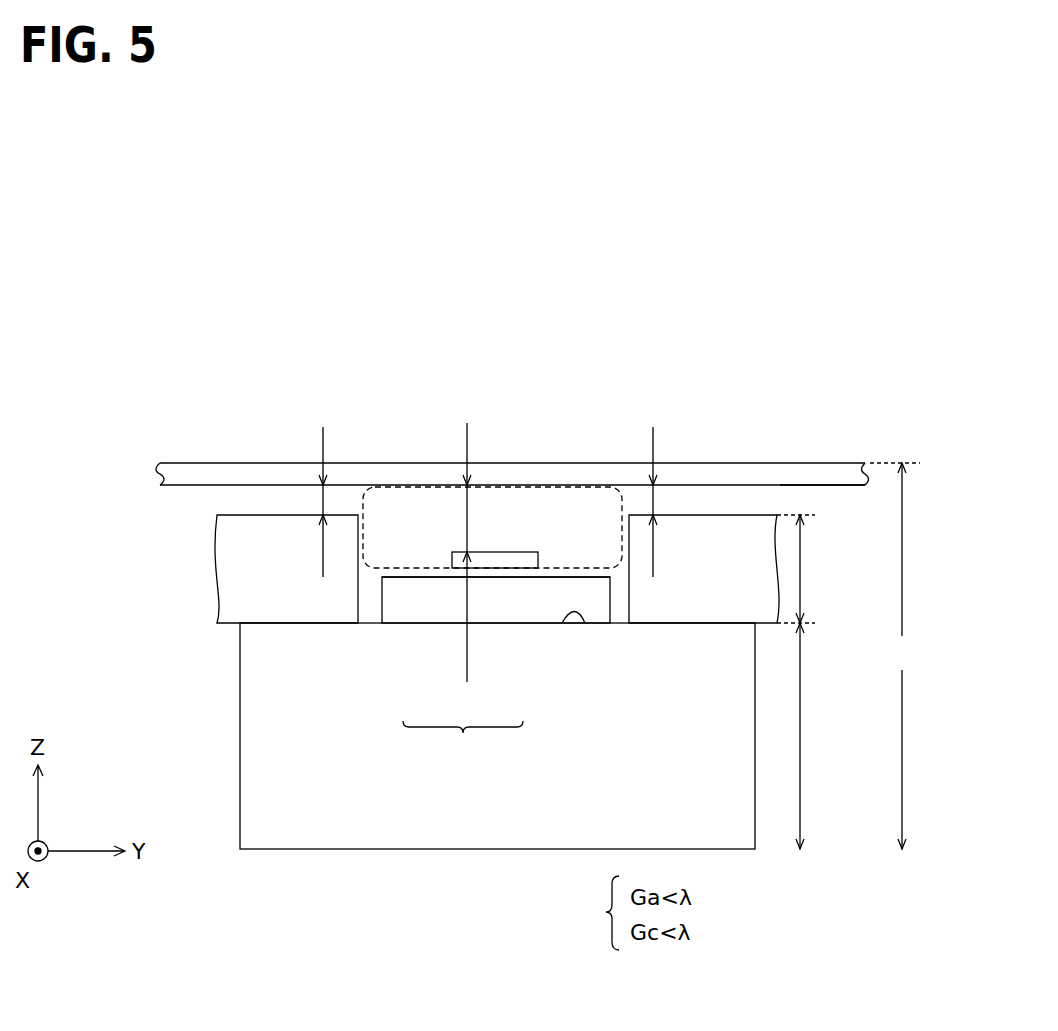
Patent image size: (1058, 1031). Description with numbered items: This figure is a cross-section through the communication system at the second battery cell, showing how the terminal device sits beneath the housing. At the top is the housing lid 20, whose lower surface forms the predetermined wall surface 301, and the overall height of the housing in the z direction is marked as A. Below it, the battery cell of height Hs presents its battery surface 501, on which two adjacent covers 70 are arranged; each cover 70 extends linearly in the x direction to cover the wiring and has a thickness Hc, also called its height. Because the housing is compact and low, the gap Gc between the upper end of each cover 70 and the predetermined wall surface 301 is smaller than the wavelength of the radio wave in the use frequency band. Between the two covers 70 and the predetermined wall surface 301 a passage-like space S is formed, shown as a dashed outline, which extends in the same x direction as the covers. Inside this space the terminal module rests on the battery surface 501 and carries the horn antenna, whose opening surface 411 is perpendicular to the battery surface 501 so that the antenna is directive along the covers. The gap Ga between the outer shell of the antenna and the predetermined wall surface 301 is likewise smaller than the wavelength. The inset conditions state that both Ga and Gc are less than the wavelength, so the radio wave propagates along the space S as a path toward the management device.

The lid / cover member 20 is at (846, 463).
The predetermined wall surface 301 is at (812, 488).
The cover 70 is at (497, 509).
The opening surface 411 is at (494, 552).
The battery surface 501 is at (580, 623).
The passage-like space S is at (535, 478).
The gap Ga is at (466, 520).
The gap Gc is at (322, 500).
The thickness Hc is at (796, 569).
The thickness Hs is at (800, 736).
The height A is at (895, 656).